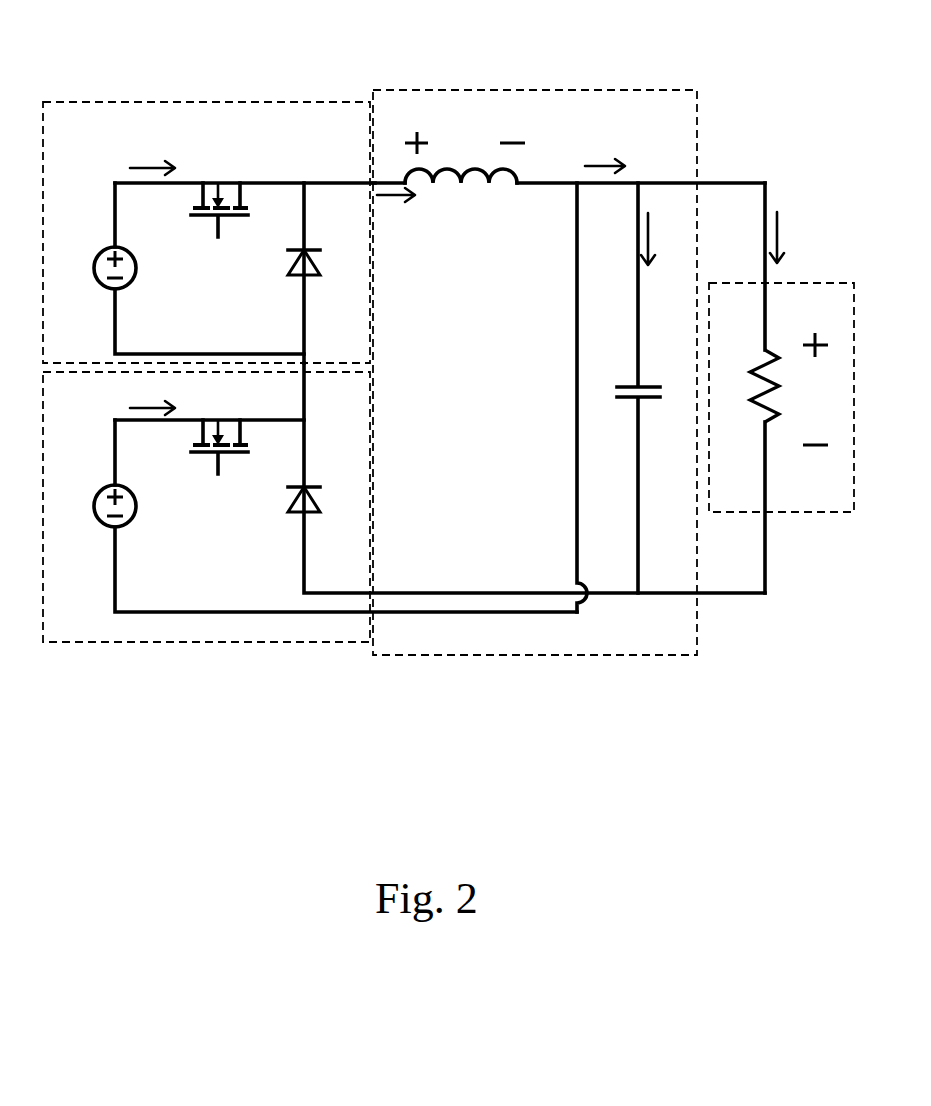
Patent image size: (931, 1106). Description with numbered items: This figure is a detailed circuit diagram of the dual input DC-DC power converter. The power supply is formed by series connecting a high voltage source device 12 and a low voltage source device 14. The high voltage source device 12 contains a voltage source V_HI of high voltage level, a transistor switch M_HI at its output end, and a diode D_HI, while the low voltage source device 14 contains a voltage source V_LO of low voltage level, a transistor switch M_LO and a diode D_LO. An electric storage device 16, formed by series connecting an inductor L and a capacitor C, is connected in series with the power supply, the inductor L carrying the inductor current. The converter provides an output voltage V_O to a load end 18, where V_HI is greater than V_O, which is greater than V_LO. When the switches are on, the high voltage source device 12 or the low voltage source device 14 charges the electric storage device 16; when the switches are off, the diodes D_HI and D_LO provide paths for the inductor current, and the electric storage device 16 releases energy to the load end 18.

The high voltage source device 12 is at (137, 101).
The low voltage source device 14 is at (105, 643).
The electric storage device 16 is at (573, 90).
The load end 18 is at (830, 283).